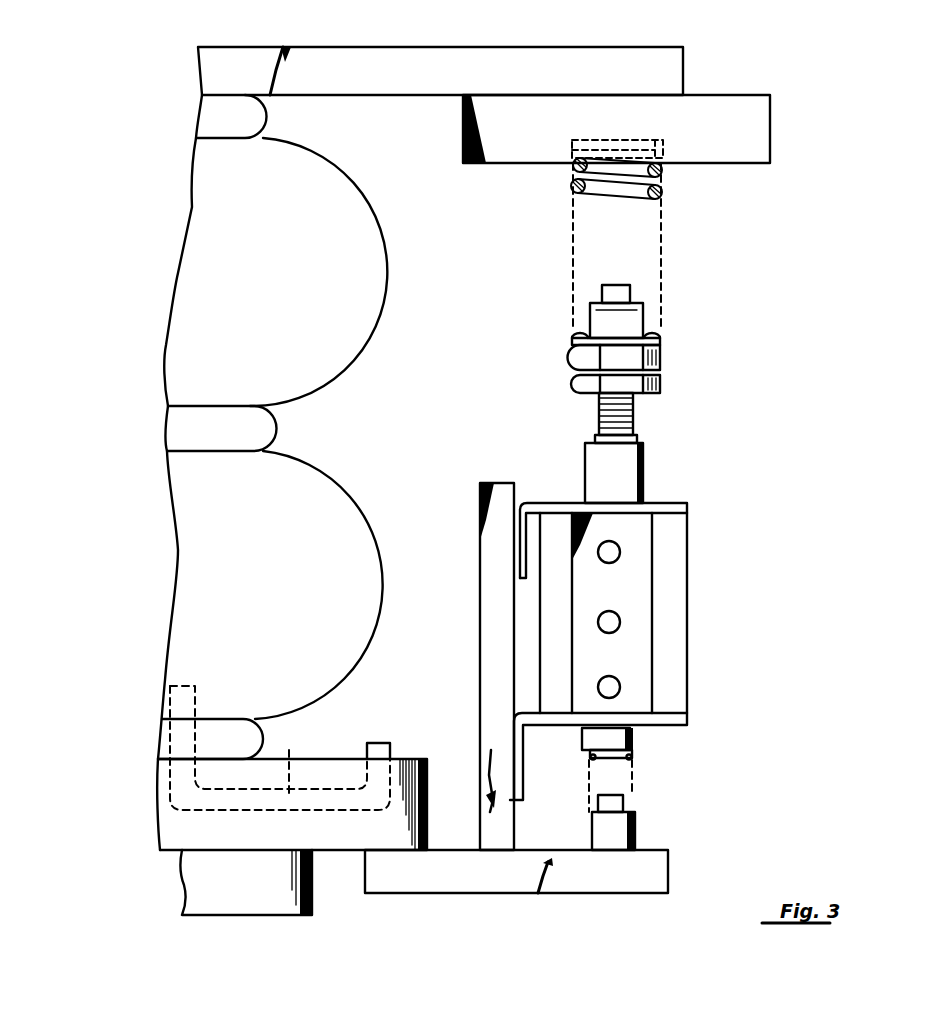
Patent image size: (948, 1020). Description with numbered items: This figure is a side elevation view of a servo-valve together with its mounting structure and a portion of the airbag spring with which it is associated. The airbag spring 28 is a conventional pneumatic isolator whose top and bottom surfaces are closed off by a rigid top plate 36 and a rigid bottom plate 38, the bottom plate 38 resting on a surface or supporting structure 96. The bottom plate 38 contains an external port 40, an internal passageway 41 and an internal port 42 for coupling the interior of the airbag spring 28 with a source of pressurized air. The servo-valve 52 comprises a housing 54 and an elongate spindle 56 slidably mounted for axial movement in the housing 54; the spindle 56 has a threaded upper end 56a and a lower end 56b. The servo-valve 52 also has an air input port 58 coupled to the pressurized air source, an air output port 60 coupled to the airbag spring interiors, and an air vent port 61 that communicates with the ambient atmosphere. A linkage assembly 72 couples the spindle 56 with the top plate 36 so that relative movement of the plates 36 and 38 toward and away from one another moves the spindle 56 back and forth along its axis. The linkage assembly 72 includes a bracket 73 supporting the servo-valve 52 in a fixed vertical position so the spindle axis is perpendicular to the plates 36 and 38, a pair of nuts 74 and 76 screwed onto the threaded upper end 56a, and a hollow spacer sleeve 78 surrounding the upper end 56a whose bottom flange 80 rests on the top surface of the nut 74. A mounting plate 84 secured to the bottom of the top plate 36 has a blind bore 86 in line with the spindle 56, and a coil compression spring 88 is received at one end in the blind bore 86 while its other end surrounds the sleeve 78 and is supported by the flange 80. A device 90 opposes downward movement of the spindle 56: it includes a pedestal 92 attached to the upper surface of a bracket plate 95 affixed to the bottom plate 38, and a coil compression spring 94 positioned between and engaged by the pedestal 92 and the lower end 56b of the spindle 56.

The airbag spring 28 is at (393, 262).
The top plate 36 is at (218, 72).
The bottom plate 38 is at (165, 822).
The external port 40 is at (378, 743).
The internal passageway 41 is at (289, 750).
The internal port 42 is at (183, 686).
The servo-valve 52 is at (697, 591).
The housing 54 is at (673, 570).
The spindle 56 is at (647, 462).
The threaded upper end 56a is at (633, 413).
The lower end 56b is at (623, 738).
The air input port 58 is at (613, 550).
The air output port 60 is at (613, 690).
The air vent port 61 is at (613, 623).
The linkage assembly 72 is at (680, 240).
The bracket 73 is at (487, 522).
The nut 74 is at (580, 360).
The nut 76 is at (580, 385).
The spacer sleeve 78 is at (628, 318).
The flange 80 is at (658, 348).
The mounting plate 84 is at (757, 133).
The blind bore 86 is at (670, 152).
The coil compression spring 88 is at (662, 192).
The device for opposing downward movement 90 is at (652, 780).
The pedestal 92 is at (635, 825).
The coil compression spring 94 is at (590, 757).
The bracket plate 95 is at (653, 868).
The supporting structure 96 is at (198, 884).